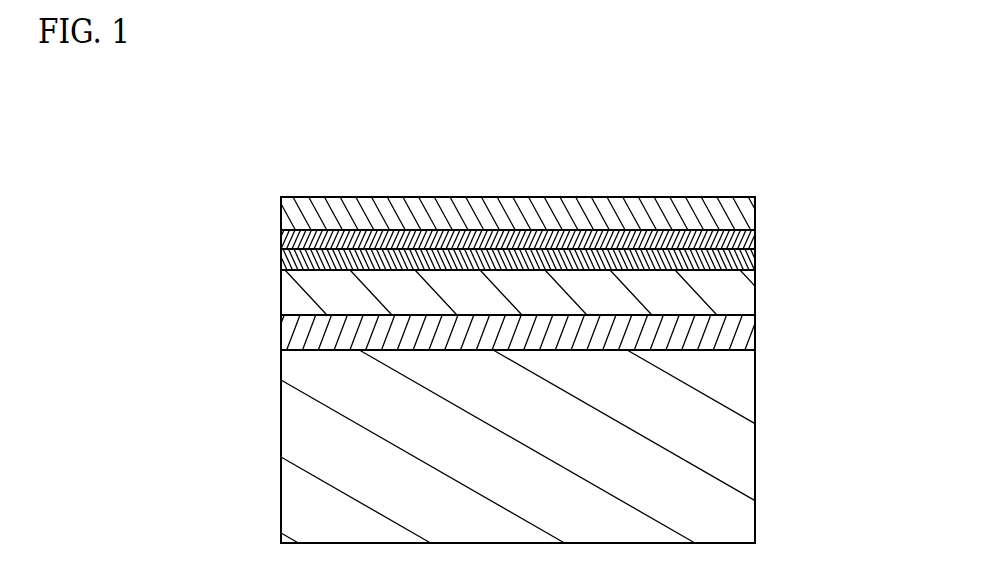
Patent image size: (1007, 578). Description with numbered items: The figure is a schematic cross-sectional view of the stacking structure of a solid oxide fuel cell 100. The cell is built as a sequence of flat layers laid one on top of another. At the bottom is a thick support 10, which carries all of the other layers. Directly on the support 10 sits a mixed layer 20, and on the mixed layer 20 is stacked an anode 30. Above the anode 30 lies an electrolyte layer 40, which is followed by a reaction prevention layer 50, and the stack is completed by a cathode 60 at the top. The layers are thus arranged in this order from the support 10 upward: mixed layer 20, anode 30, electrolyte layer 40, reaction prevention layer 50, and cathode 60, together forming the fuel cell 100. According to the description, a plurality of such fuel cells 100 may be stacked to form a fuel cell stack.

The solid oxide fuel cell 100 is at (935, 159).
The support 10 is at (747, 463).
The mixed layer 20 is at (745, 338).
The anode 30 is at (288, 300).
The electrolyte layer 40 is at (747, 257).
The reaction prevention layer 50 is at (287, 247).
The cathode 60 is at (747, 213).